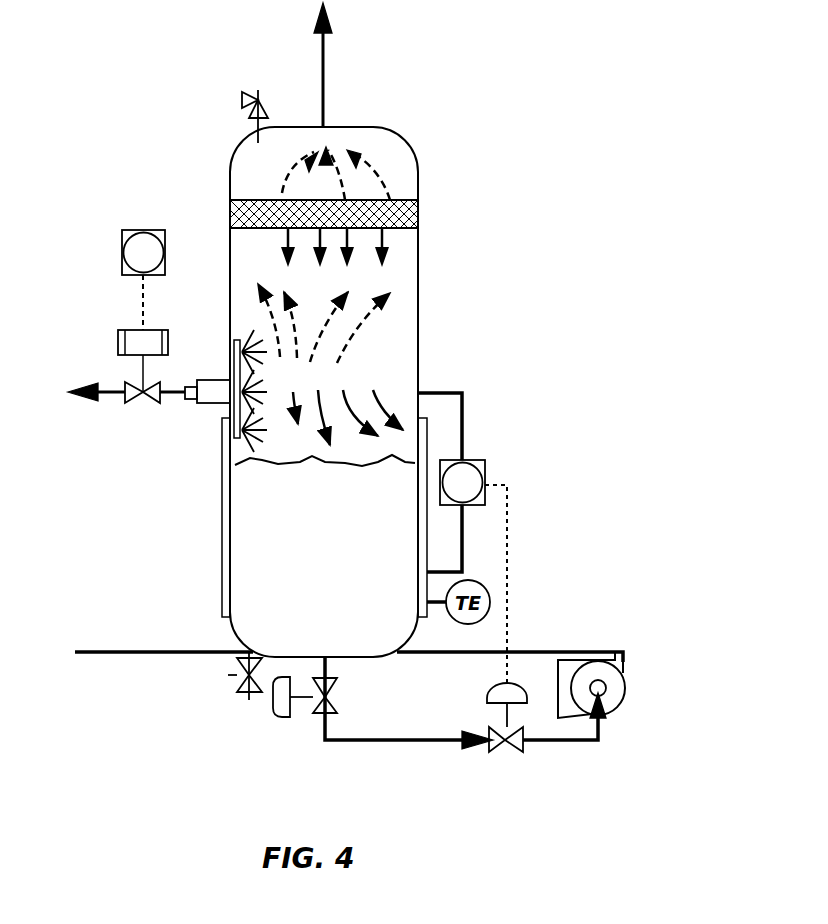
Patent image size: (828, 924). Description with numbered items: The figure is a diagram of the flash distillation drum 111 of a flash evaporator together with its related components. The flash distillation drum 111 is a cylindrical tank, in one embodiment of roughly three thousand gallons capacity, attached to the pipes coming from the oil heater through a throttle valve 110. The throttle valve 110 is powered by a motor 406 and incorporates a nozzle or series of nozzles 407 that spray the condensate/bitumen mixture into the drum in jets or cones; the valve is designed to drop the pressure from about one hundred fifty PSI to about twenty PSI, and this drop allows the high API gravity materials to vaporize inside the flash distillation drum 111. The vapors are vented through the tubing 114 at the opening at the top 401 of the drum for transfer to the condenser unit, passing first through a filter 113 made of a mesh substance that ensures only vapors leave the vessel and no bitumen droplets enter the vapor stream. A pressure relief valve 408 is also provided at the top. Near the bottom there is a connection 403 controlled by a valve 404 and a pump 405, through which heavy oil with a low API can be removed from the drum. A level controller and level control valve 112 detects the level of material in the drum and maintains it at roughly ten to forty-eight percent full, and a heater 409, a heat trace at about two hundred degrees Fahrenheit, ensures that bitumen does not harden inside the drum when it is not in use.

The throttle valve 110 is at (155, 400).
The flash distillation drum 111 is at (418, 270).
The level controller and level control valve 112 is at (485, 469).
The filter 113 is at (413, 213).
The tubing 114 is at (322, 70).
The opening at the top 401 is at (325, 127).
The connection 403 is at (337, 675).
The valve 404 is at (313, 713).
The pump 405 is at (622, 690).
The motor 406 is at (118, 340).
The nozzles 407 is at (234, 381).
The pressure relief valve 408 is at (240, 102).
The heater 409 is at (222, 517).